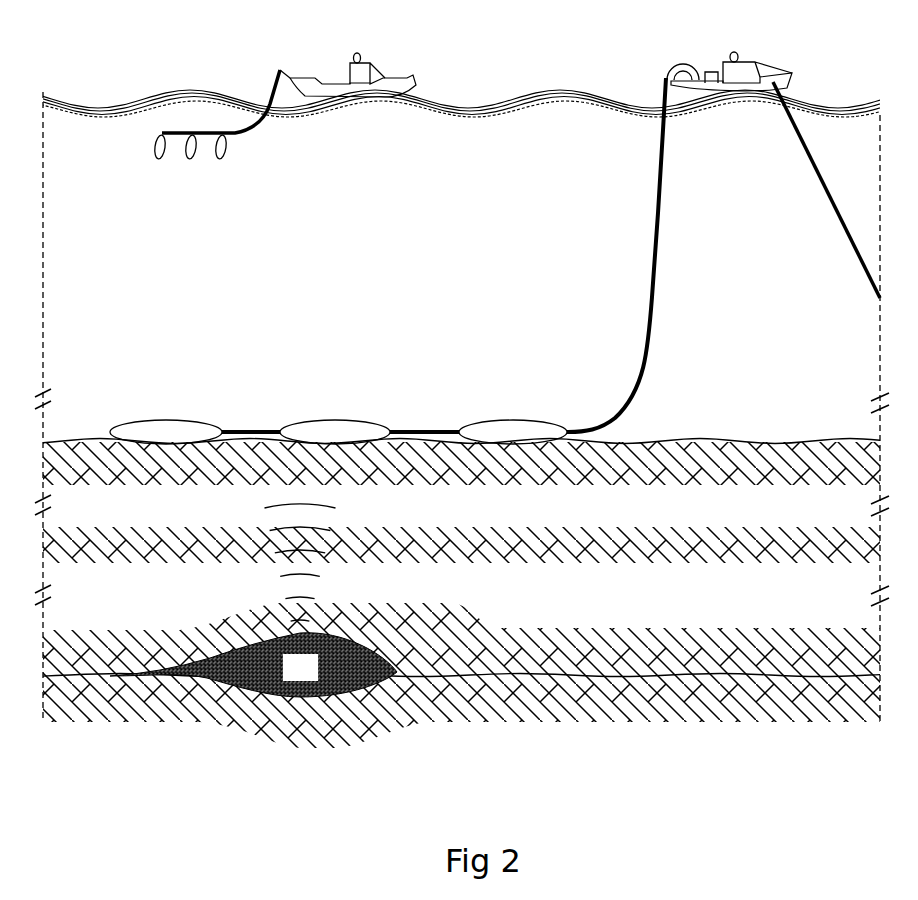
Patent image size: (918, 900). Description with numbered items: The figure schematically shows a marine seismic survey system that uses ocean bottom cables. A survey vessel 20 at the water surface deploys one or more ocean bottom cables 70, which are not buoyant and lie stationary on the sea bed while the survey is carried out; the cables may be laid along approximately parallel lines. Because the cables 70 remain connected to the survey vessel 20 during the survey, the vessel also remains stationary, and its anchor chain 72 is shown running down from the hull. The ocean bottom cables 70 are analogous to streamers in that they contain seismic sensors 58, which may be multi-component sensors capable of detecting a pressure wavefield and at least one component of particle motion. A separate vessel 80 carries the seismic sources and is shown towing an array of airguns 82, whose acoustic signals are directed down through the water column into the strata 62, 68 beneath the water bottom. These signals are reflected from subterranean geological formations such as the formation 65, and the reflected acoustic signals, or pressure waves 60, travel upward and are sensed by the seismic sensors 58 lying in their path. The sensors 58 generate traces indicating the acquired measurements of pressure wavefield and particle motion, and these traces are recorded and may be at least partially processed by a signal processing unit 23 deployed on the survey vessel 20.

The survey vessel 20 is at (783, 72).
The signal processing unit 23 is at (711, 71).
The seismic sensors 58 is at (148, 420).
The pressure waves 60 is at (262, 587).
The strata 62 is at (467, 646).
The formation 65 is at (314, 679).
The strata 68 is at (467, 717).
The ocean bottom cables 70 is at (657, 213).
The anchor chain 72 is at (830, 198).
The separate vessel 80 is at (407, 73).
The array of airguns 82 is at (157, 160).